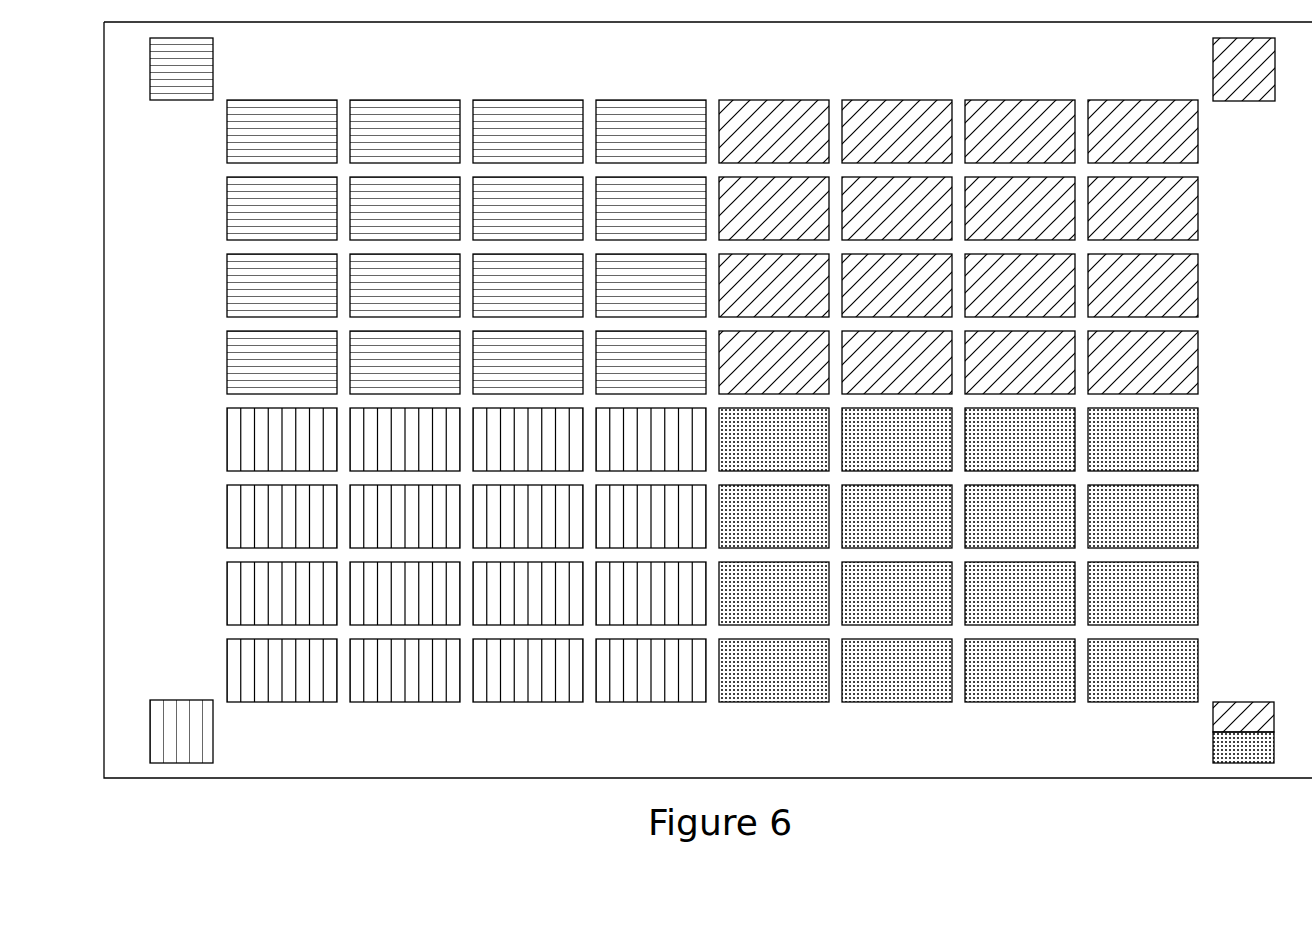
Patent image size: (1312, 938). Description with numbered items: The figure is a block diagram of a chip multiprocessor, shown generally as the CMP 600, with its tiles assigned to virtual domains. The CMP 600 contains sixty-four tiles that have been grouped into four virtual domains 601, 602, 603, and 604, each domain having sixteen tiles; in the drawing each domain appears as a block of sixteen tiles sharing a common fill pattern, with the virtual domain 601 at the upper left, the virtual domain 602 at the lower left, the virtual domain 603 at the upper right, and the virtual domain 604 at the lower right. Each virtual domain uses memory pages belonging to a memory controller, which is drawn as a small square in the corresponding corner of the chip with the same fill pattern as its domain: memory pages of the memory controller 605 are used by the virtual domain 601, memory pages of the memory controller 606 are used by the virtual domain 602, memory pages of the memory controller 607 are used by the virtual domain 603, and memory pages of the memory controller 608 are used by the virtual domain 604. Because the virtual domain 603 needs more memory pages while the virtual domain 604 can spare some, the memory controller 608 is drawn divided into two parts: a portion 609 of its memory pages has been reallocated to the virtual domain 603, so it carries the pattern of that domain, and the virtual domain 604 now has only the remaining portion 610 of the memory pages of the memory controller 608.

The CMP 600 is at (566, 792).
The virtual domain 601 is at (202, 132).
The virtual domain 602 is at (202, 432).
The virtual domain 603 is at (1230, 130).
The virtual domain 604 is at (1230, 437).
The memory controller 605 is at (214, 55).
The memory controller 606 is at (214, 752).
The memory controller 607 is at (1212, 47).
The memory controller 608 is at (1237, 718).
The portion of the memory pages 609 is at (1274, 712).
The portion of the memory pages 610 is at (1274, 757).